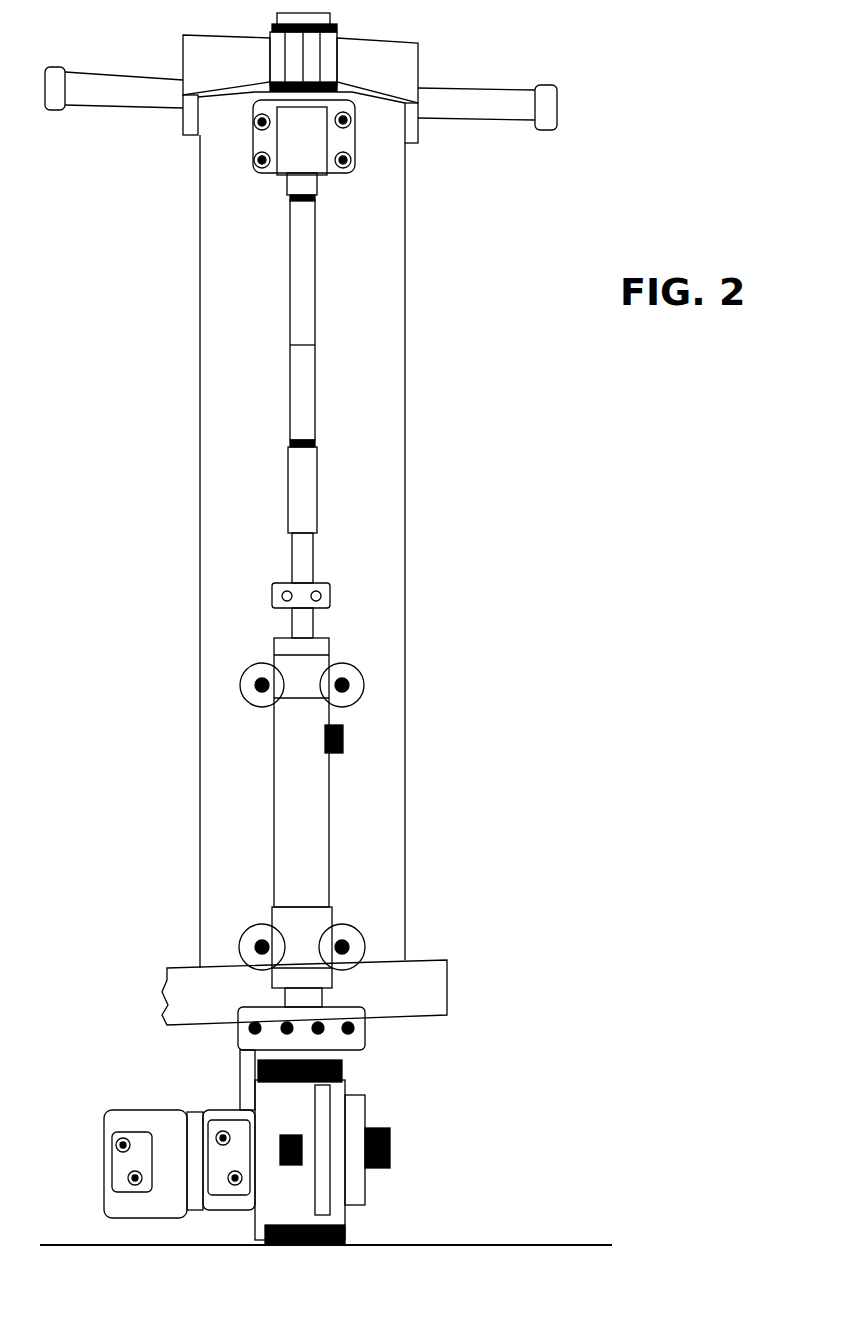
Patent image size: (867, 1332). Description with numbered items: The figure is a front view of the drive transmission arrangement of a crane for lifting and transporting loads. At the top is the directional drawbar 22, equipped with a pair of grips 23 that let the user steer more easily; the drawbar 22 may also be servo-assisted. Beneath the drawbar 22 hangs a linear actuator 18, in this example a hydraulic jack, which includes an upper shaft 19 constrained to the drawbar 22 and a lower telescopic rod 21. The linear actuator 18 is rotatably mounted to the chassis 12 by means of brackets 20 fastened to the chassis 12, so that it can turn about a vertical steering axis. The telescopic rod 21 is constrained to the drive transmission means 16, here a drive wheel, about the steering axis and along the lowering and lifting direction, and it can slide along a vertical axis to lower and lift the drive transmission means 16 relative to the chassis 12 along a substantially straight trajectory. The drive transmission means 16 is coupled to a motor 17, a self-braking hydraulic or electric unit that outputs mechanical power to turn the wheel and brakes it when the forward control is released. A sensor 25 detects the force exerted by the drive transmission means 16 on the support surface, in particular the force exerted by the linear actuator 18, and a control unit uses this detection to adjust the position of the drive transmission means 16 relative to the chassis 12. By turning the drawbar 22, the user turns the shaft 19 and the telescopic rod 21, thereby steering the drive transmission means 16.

The chassis 12 is at (409, 428).
The drive transmission means 16 is at (350, 1065).
The motor 17 is at (172, 1135).
The linear actuator 18 is at (273, 788).
The shaft 19 is at (302, 298).
The brackets 20 is at (350, 937).
The telescopic rod 21 is at (298, 997).
The directional drawbar 22 is at (424, 55).
The grips 23 is at (112, 92).
The sensor 25 is at (349, 1127).